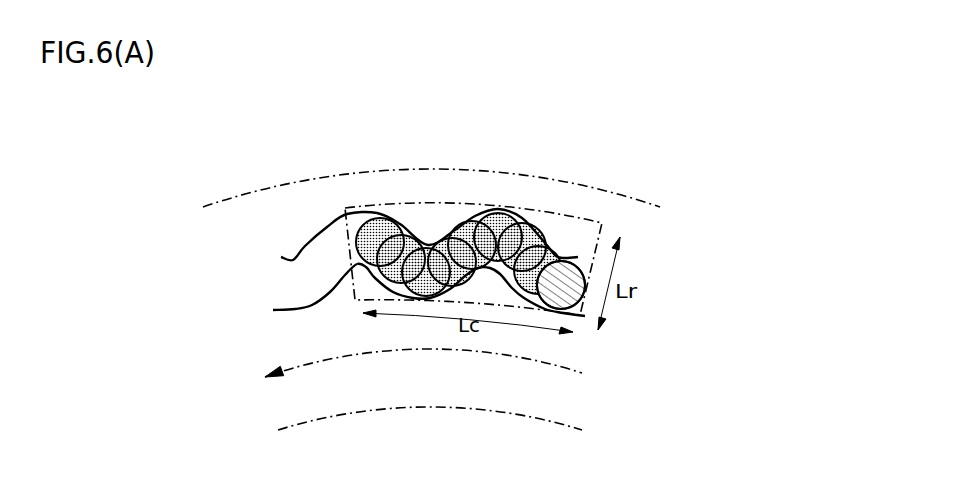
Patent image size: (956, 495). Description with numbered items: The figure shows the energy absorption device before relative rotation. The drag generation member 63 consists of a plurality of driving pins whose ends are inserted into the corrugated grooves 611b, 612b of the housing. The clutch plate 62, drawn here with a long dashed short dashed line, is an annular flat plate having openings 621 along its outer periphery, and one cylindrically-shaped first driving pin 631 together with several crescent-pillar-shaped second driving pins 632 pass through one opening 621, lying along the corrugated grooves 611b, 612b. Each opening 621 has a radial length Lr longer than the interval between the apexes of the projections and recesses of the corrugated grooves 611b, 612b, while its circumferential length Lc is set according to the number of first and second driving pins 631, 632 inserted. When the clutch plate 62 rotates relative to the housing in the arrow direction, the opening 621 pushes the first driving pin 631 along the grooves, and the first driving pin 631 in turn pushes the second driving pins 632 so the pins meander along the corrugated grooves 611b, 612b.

The clutch plate 62 is at (278, 187).
The opening 621 is at (424, 205).
The drag generation member 63 is at (488, 205).
The second driving pin 632 is at (499, 217).
The first driving pin 631 is at (567, 272).
The corrugated groove 611b is at (279, 261).
The corrugated groove 612b is at (303, 244).